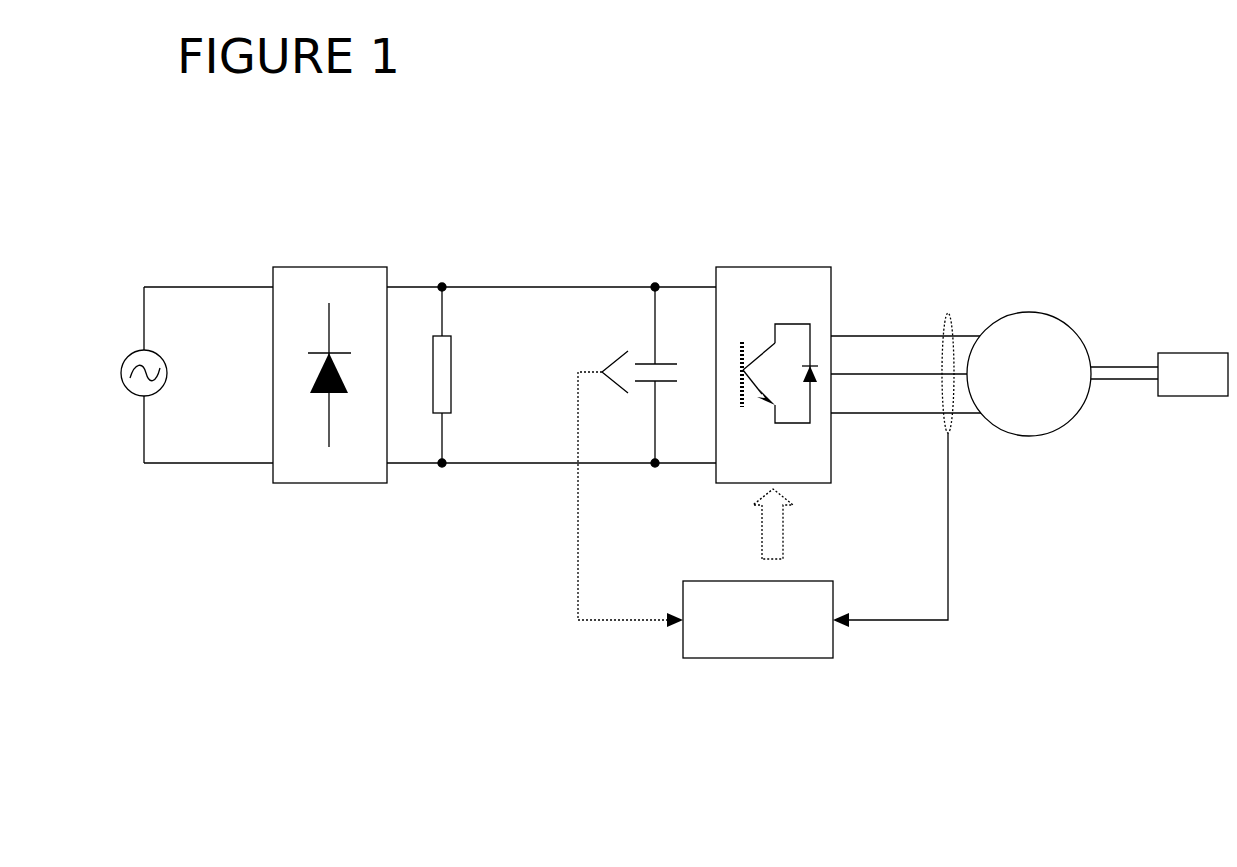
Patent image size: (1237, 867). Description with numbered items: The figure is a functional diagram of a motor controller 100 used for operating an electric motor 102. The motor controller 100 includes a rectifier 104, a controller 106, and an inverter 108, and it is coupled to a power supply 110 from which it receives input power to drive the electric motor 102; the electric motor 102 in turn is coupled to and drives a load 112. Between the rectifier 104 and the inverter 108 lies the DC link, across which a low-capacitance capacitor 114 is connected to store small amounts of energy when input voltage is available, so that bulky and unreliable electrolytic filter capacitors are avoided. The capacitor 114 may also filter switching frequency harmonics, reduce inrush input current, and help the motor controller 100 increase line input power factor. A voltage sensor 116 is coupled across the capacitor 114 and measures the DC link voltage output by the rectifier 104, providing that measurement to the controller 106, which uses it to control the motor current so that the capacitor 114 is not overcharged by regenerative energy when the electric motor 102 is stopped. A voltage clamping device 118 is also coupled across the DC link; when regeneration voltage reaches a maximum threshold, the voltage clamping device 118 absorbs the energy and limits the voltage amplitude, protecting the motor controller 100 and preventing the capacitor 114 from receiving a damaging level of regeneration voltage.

The motor controller 100 is at (899, 145).
The electric motor 102 is at (1062, 421).
The rectifier 104 is at (306, 266).
The controller 106 is at (714, 580).
The inverter 108 is at (760, 266).
The power supply 110 is at (122, 364).
The load 112 is at (1212, 387).
The low-capacitance capacitor 114 is at (637, 356).
The voltage sensor 116 is at (630, 617).
The voltage clamping device 118 is at (451, 402).